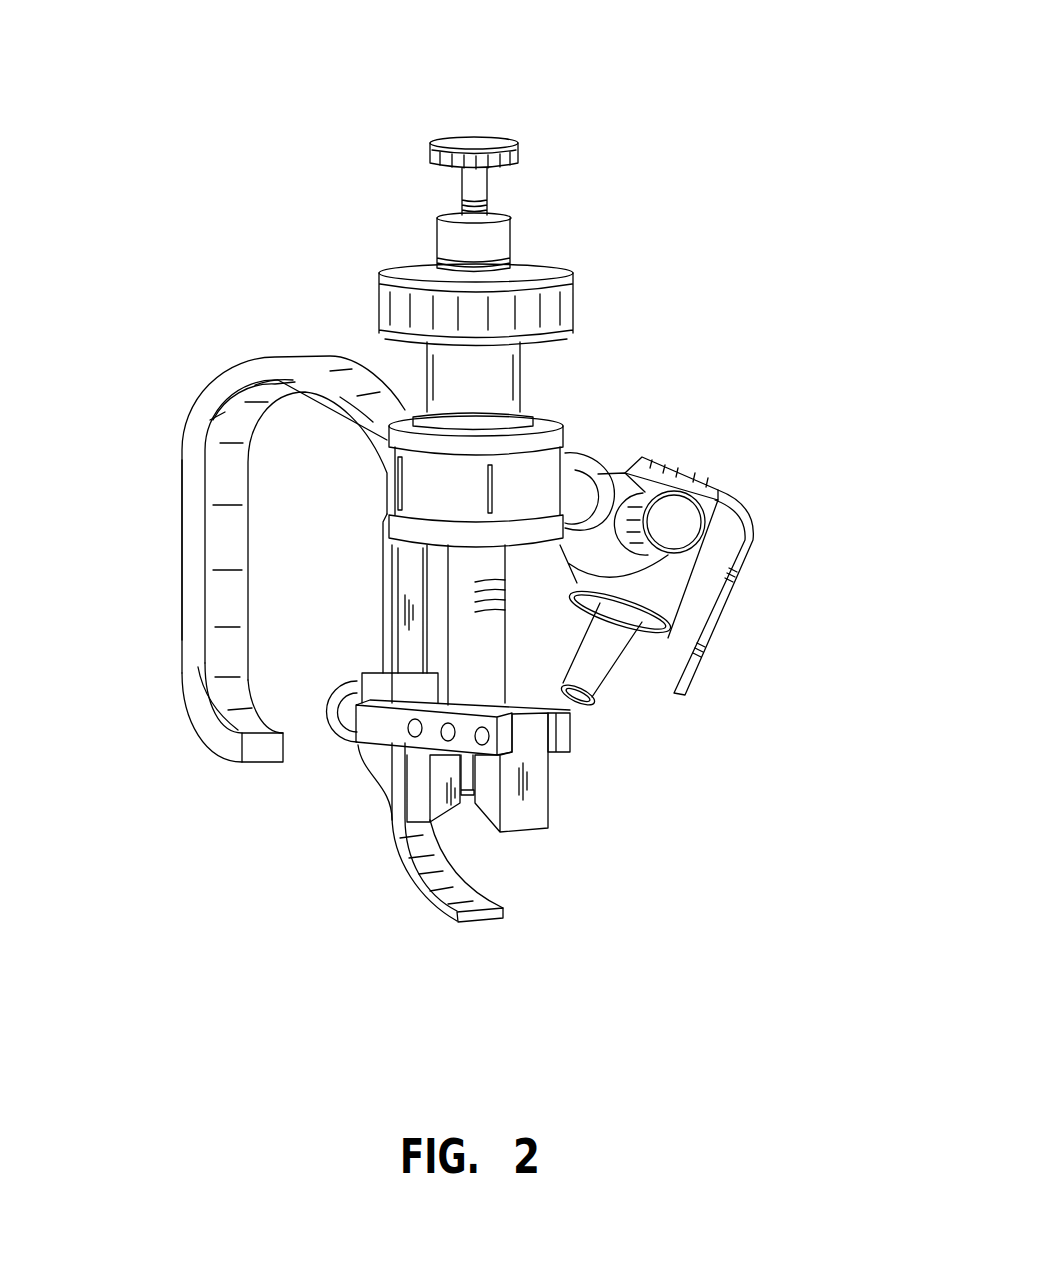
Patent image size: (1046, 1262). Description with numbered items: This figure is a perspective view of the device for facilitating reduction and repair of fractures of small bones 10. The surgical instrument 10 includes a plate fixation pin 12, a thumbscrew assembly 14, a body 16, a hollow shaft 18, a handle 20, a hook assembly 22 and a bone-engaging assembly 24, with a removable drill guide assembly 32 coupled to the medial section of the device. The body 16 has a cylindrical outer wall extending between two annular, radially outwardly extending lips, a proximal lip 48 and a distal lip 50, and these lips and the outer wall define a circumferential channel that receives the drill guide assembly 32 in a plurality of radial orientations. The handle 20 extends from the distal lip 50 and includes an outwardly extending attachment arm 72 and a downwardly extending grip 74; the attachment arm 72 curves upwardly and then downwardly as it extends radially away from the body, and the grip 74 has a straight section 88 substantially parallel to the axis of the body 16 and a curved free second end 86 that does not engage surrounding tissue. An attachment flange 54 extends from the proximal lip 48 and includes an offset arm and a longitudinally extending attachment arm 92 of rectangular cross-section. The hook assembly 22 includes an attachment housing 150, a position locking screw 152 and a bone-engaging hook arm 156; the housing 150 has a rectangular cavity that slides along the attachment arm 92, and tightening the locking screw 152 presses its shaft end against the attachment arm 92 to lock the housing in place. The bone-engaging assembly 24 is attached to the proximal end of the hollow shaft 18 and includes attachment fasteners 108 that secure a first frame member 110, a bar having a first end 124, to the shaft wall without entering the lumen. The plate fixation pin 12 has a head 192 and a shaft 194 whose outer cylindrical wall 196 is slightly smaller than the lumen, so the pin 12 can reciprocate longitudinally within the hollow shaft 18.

The device for facilitating reduction and repair of fractures of small bones 10 is at (801, 115).
The plate fixation pin 12 is at (478, 173).
The thumbscrew assembly 14 is at (588, 300).
The body 16 is at (372, 502).
The hollow shaft 18 is at (556, 670).
The handle 20 is at (229, 548).
The hook assembly 22 is at (392, 891).
The bone-engaging assembly 24 is at (567, 800).
The removable drill guide assembly 32 is at (701, 453).
The proximal lip 48 is at (514, 600).
The distal lip 50 is at (555, 438).
The attachment flange 54 is at (380, 620).
The attachment arm 72 is at (327, 357).
The grip 74 is at (215, 600).
The second end of the grip 86 is at (215, 743).
The straight section 88 is at (182, 505).
The attachment arm 92 is at (413, 573).
The attachment fasteners 108 is at (441, 738).
The first frame member 110 is at (543, 690).
The first end 124 is at (573, 742).
The attachment housing 150 is at (475, 773).
The position locking screw 152 is at (360, 674).
The bone-engaging hook arm 156 is at (452, 922).
The head 192 is at (433, 153).
The shaft 194 is at (487, 192).
The outer cylindrical wall 196 is at (470, 192).